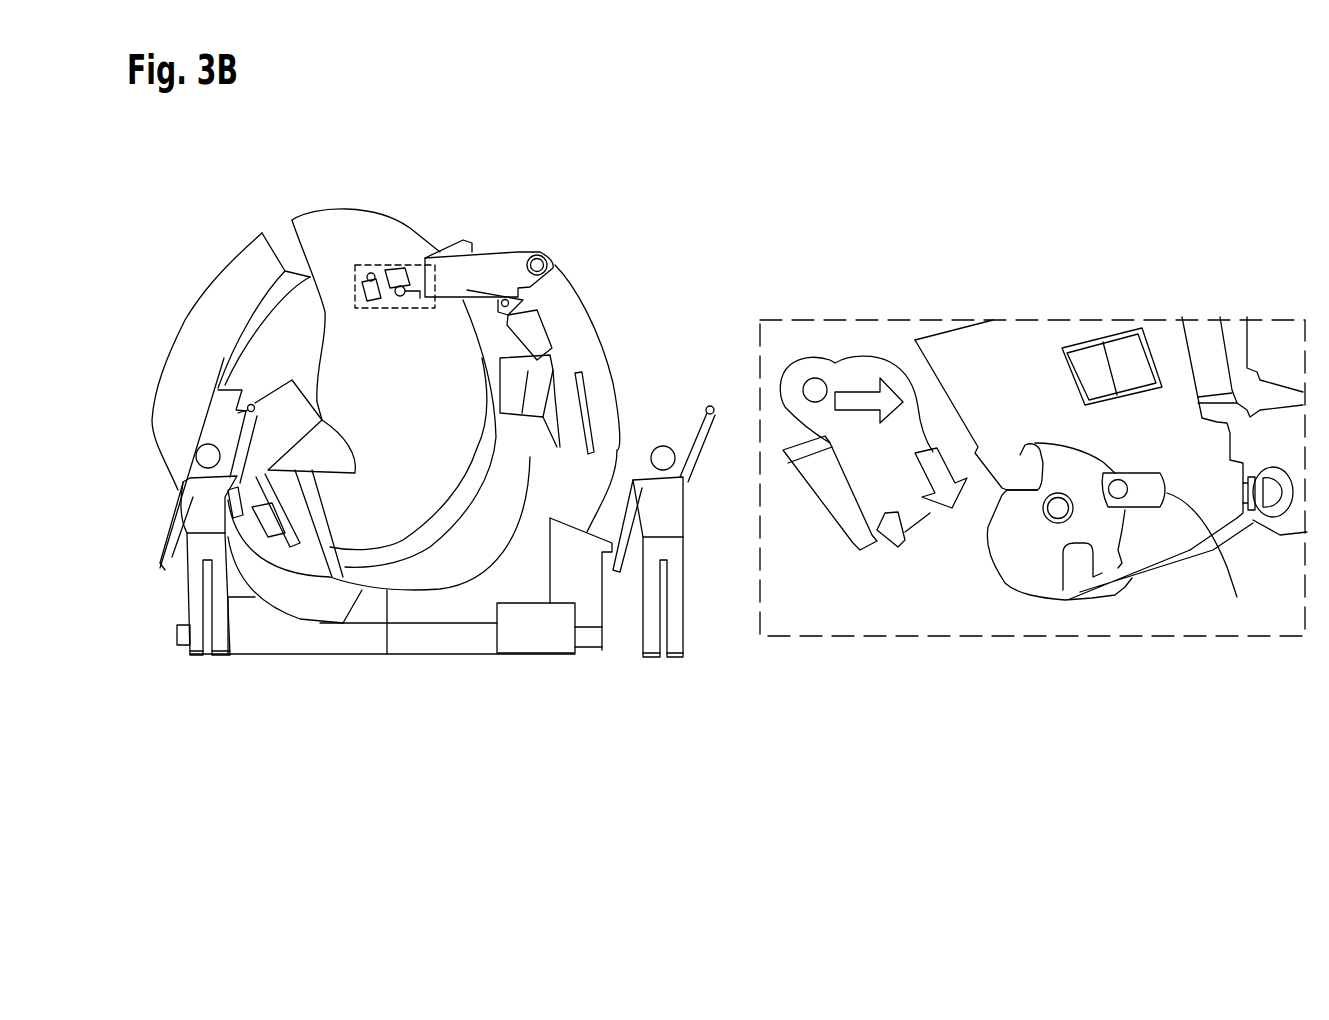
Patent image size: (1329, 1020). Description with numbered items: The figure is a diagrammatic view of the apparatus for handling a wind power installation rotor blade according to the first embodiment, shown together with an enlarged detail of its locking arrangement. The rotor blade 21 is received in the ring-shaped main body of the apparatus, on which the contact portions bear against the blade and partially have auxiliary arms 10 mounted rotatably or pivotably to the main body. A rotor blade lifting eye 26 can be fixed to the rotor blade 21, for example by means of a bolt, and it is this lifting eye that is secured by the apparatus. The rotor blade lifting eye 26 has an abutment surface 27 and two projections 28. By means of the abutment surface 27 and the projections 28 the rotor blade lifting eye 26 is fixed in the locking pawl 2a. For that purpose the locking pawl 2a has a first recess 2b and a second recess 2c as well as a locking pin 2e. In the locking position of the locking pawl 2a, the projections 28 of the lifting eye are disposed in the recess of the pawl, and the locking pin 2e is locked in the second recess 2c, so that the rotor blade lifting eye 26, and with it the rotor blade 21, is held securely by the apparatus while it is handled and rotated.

The auxiliary arm 10 is at (218, 303).
The rotor blade 21 is at (363, 230).
The rotor blade lifting eye 26 is at (370, 267).
The abutment surface 27 is at (930, 418).
The projections 28 is at (818, 390).
The locking pawl 2a is at (1037, 580).
The first recess 2b is at (1043, 463).
The second recess 2c is at (1120, 510).
The locking pin 2e is at (1167, 493).